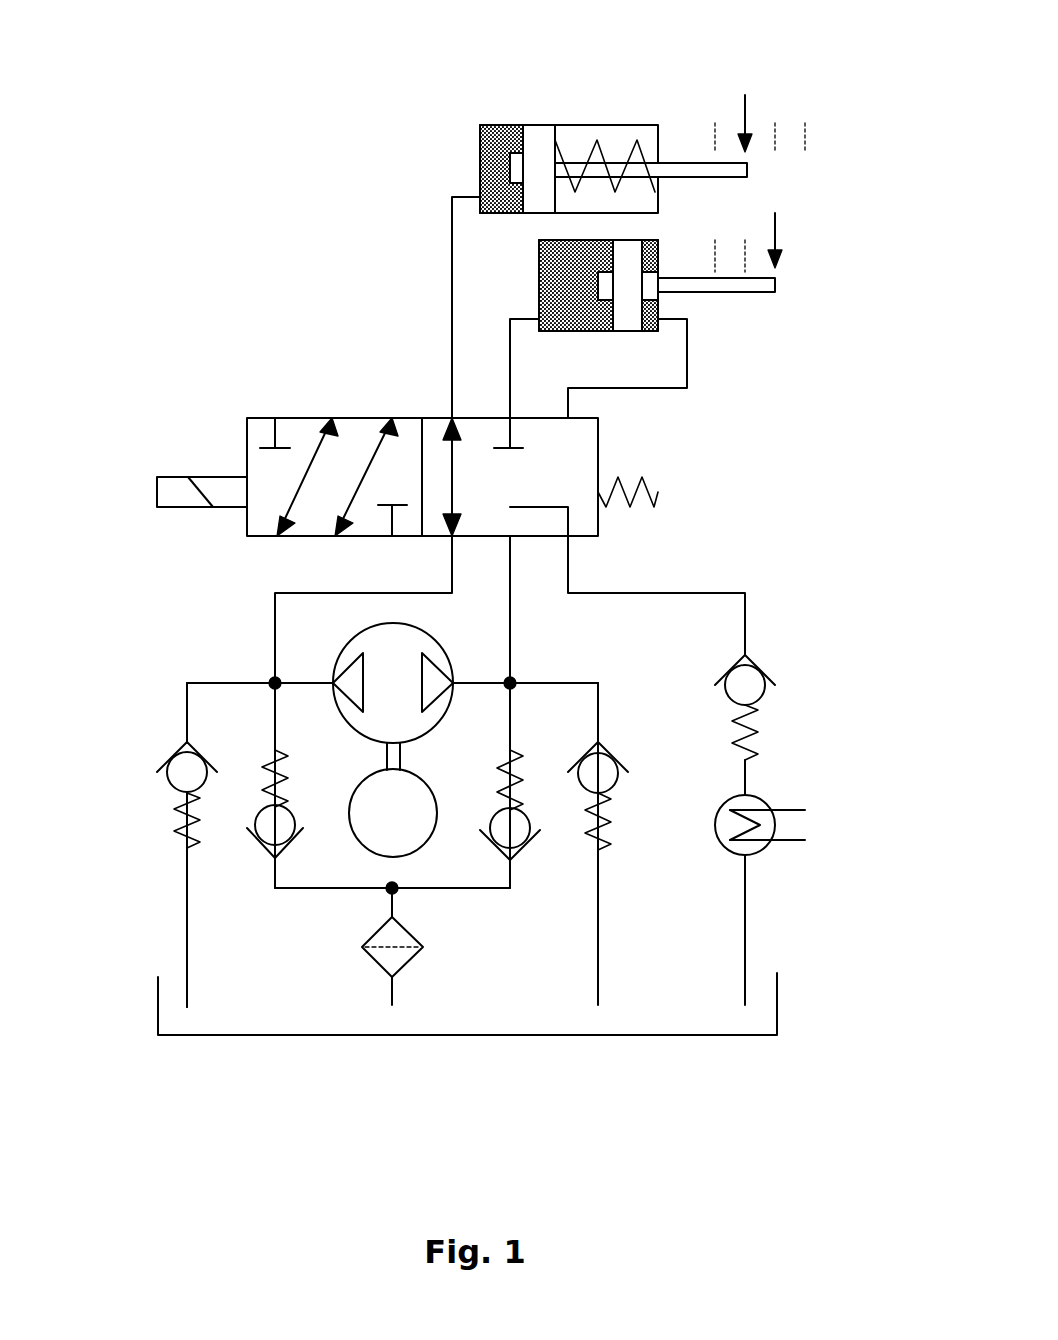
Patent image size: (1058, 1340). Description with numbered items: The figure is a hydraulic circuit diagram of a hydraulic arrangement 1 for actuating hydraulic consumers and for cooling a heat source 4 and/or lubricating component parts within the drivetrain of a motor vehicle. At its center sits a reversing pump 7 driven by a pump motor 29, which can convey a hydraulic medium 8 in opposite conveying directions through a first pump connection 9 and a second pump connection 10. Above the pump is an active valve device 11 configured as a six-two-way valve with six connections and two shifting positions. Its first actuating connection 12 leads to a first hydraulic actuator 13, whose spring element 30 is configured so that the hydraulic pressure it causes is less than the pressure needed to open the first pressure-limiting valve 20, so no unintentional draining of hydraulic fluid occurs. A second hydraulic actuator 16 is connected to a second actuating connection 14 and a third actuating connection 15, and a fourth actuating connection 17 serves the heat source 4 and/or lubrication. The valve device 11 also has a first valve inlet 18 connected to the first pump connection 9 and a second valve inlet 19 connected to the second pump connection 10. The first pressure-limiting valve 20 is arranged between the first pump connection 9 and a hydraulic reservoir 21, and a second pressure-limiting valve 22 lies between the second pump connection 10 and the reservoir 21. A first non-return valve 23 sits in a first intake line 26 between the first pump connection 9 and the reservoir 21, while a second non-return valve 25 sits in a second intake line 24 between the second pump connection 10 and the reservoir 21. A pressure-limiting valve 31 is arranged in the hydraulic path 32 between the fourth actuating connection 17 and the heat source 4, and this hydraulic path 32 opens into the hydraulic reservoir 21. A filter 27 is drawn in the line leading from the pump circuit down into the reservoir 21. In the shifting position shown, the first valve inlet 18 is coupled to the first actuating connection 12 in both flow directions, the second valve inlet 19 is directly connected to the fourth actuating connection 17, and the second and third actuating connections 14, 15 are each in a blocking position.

The hydraulic arrangement 1 is at (288, 122).
The heat source 4 is at (820, 826).
The reversing pump 7 is at (343, 640).
The hydraulic medium 8 is at (443, 1019).
The first pump connection 9 is at (313, 683).
The second pump connection 10 is at (460, 680).
The active valve device 11 is at (247, 418).
The first actuating connection 12 is at (448, 418).
The first hydraulic actuator 13 is at (570, 124).
The second actuating connection 14 is at (508, 407).
The third actuating connection 15 is at (570, 402).
The second hydraulic actuator 16 is at (660, 297).
The fourth actuating connection 17 is at (568, 542).
The first valve inlet 18 is at (452, 540).
The second valve inlet 19 is at (510, 552).
The first pressure-limiting valve 20 is at (160, 812).
The hydraulic reservoir 21 is at (587, 1035).
The second pressure-limiting valve 22 is at (608, 825).
The first non-return valve 23 is at (250, 840).
The second intake line 24 is at (470, 888).
The second non-return valve 25 is at (540, 850).
The first intake line 26 is at (297, 888).
The filter 27 is at (407, 963).
The pump motor 29 is at (427, 840).
The spring element 30 is at (595, 160).
The pressure-limiting valve 31 is at (755, 730).
The hydraulic path 32 is at (750, 615).